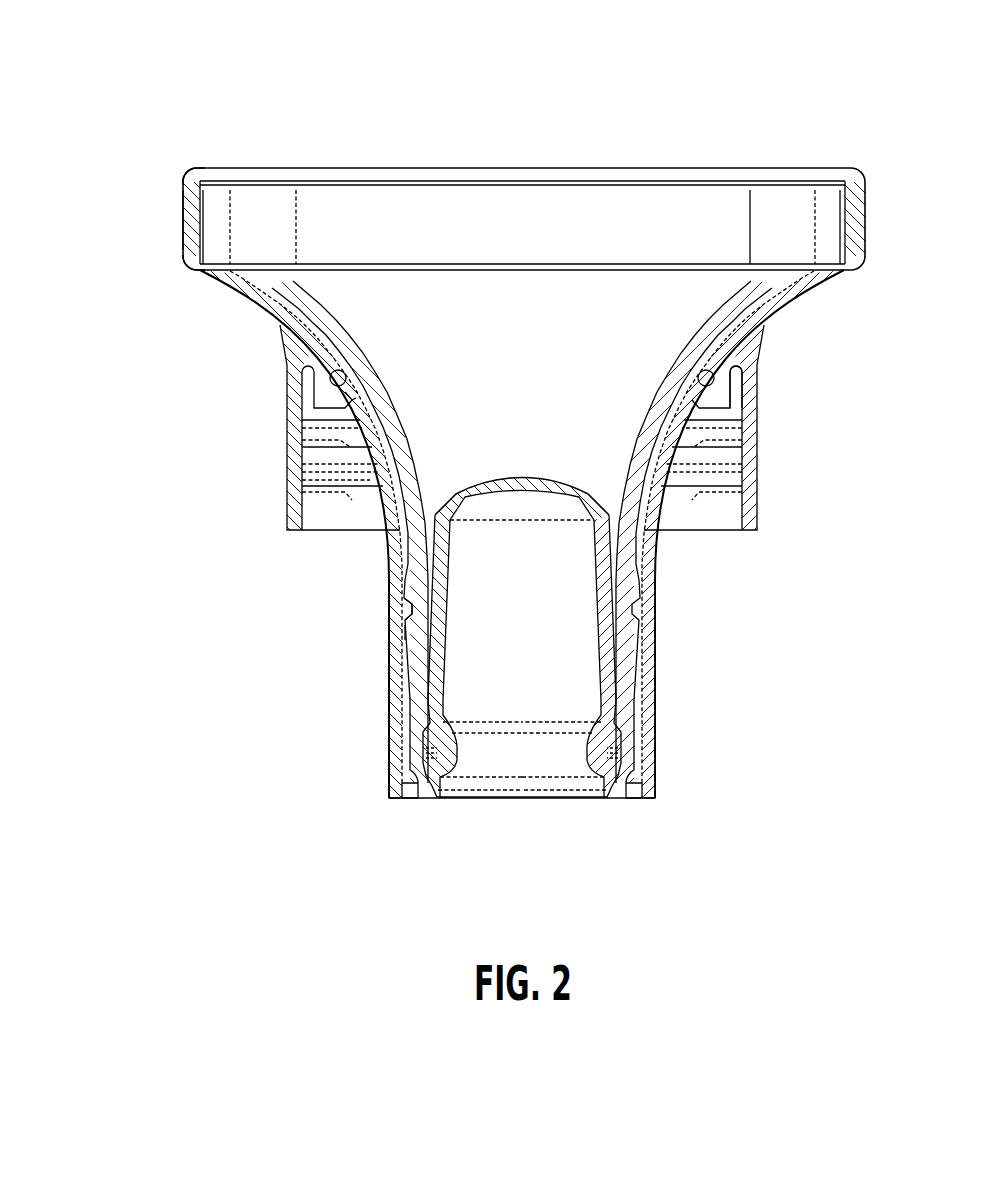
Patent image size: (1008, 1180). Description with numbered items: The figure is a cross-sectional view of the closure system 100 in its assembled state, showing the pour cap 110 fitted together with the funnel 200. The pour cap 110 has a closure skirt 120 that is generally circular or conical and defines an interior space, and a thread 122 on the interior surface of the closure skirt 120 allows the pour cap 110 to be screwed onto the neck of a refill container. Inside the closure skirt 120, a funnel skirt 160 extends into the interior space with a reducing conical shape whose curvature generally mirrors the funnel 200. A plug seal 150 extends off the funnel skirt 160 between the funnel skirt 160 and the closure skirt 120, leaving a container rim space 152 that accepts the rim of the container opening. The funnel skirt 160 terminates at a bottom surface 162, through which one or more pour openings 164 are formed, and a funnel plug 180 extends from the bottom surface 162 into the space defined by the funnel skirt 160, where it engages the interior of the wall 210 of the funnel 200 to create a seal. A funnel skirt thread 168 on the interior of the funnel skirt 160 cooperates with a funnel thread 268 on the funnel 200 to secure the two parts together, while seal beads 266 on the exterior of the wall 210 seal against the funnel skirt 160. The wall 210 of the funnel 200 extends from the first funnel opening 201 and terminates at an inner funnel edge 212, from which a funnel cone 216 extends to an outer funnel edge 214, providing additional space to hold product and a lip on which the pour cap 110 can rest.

The closure system 100 is at (289, 72).
The pour cap 110 is at (755, 568).
The closure skirt 120 is at (287, 505).
The thread 122 is at (343, 477).
The plug seal 150 is at (723, 397).
The container rim space 152 is at (737, 390).
The funnel skirt 160 is at (390, 717).
The bottom surface 162 is at (393, 798).
The pour opening 164 is at (676, 524).
The funnel skirt thread 168 is at (400, 603).
The funnel plug 180 is at (522, 698).
The funnel 200 is at (196, 118).
The first funnel opening 201 is at (602, 222).
The wall 210 is at (668, 478).
The inner funnel edge 212 is at (195, 273).
The outer funnel edge 214 is at (187, 172).
The funnel cone 216 is at (190, 230).
The seal bead 266 is at (353, 392).
The funnel thread 268 is at (403, 632).